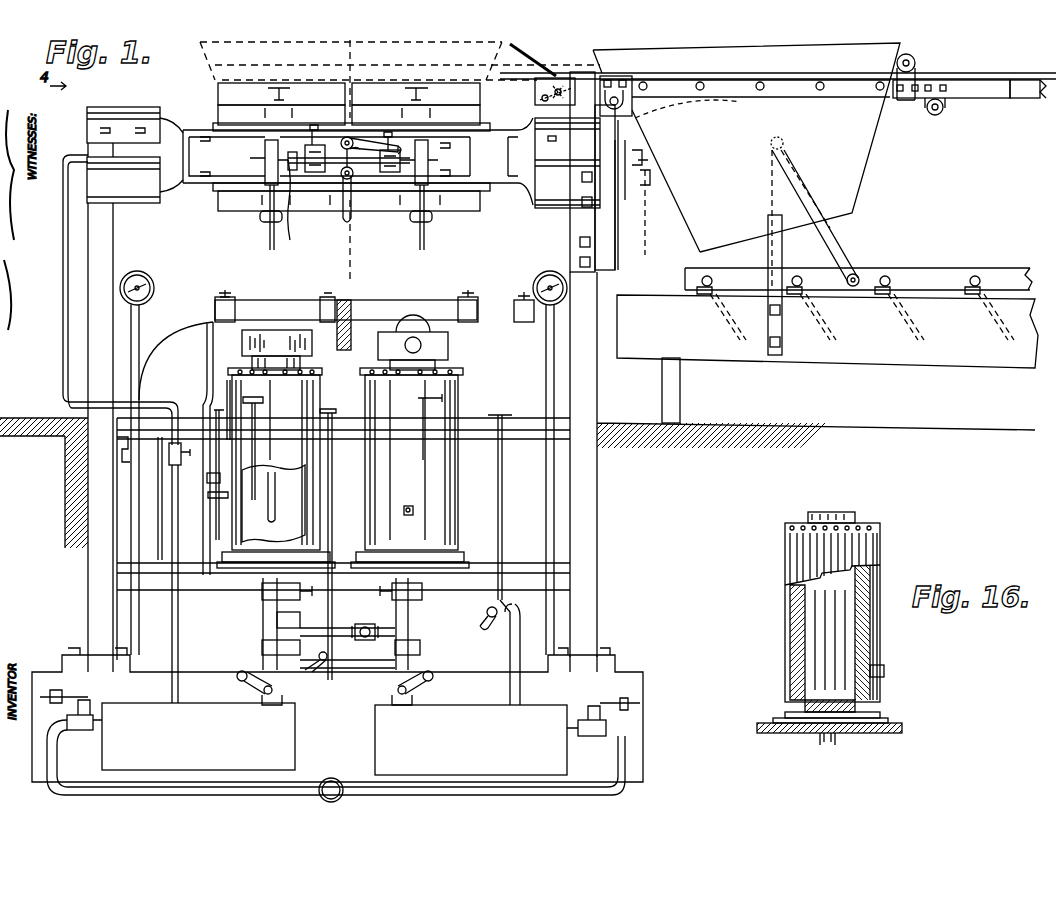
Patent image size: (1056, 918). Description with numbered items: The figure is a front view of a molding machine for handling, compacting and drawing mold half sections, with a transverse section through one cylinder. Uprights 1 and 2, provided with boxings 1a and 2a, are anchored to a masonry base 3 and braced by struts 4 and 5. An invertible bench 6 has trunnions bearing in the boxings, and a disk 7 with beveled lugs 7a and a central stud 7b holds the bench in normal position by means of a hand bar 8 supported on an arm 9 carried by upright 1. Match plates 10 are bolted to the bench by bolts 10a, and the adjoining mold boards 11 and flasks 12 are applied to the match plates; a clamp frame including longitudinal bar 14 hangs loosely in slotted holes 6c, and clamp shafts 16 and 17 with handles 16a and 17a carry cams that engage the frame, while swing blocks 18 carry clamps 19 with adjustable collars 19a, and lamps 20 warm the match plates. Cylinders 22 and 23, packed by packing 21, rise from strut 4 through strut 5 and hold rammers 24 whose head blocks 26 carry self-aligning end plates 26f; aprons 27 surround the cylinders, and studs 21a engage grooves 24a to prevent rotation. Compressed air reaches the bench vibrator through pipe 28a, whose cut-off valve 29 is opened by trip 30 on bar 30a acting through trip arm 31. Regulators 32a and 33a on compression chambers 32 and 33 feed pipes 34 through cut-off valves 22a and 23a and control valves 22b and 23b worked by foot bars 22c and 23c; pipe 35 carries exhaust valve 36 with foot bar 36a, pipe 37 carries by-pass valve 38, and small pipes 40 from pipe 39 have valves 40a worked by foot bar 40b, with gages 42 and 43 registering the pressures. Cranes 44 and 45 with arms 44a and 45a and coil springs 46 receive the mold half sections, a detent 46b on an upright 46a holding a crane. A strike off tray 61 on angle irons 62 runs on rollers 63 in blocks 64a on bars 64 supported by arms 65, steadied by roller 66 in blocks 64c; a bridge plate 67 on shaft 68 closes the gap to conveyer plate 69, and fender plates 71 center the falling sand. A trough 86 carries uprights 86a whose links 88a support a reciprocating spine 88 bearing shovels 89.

In FIG. 1, the upright 1 is at (594, 574).
In FIG. 1, the boxing 1a is at (567, 163).
In FIG. 1, the upright 2 is at (90, 575).
In FIG. 1, the boxing 2a is at (123, 155).
In FIG. 1, the base 3 is at (643, 760).
In FIG. 1, the strut 4 is at (514, 570).
In FIG. 16, the strut 4 is at (904, 724).
In FIG. 1, the strut 5 is at (307, 35).
In FIG. 1, the invertible bench 6 is at (505, 190).
In FIG. 1, the slotted hole 6c is at (291, 210).
In FIG. 1, the disk 7 is at (87, 138).
In FIG. 1, the beveled lugs 7a is at (655, 138).
In FIG. 1, the stud 7b is at (650, 178).
In FIG. 1, the hand bar 8 is at (190, 268).
In FIG. 1, the arm 9 is at (620, 237).
In FIG. 1, the match plate 10 is at (472, 132).
In FIG. 1, the bolts 10a is at (470, 147).
In FIG. 1, the block 11 is at (218, 116).
In FIG. 1, the flask 12 is at (349, 94).
In FIG. 1, the longitudinal bar 14 is at (430, 160).
In FIG. 1, the clamp shaft 16 is at (352, 139).
In FIG. 1, the handle 16a is at (400, 148).
In FIG. 1, the clamp shaft 17 is at (342, 180).
In FIG. 1, the handle 17a is at (352, 216).
In FIG. 1, the swing block 18 is at (264, 166).
In FIG. 1, the clamp 19 is at (426, 232).
In FIG. 1, the collar 19a is at (262, 218).
In FIG. 1, the lamp 20 is at (390, 172).
In FIG. 1, the packing 21 is at (462, 566).
In FIG. 16, the packing 21 is at (776, 718).
In FIG. 1, the stud 21a is at (405, 516).
In FIG. 16, the stud 21a is at (886, 670).
In FIG. 1, the cylinder 22 is at (450, 554).
In FIG. 16, the cylinder 22 is at (872, 712).
In FIG. 1, the cut off valve 22a is at (420, 597).
In FIG. 1, the control valve 22b is at (432, 696).
In FIG. 1, the foot bar 22c is at (440, 398).
In FIG. 1, the cylinder 23 is at (230, 550).
In FIG. 1, the cut off valve 23a is at (262, 597).
In FIG. 1, the control valve 23b is at (262, 696).
In FIG. 1, the foot bar 23c is at (245, 388).
In FIG. 1, the rammer 24 is at (268, 497).
In FIG. 16, the rammer 24 is at (800, 614).
In FIG. 16, the groove 24a is at (870, 632).
In FIG. 1, the head block 26 is at (460, 355).
In FIG. 1, the end plate 26f is at (442, 336).
In FIG. 1, the apron 27 is at (345, 459).
In FIG. 16, the apron 27 is at (878, 552).
In FIG. 1, the air pipe 28a is at (63, 352).
In FIG. 1, the cut-off valve 29 is at (170, 456).
In FIG. 1, the trip 30 is at (208, 494).
In FIG. 1, the bar 30a is at (212, 476).
In FIG. 1, the trip arm 31 is at (200, 400).
In FIG. 1, the compression chamber 32 is at (471, 740).
In FIG. 1, the regulator 32a is at (596, 737).
In FIG. 1, the compression chamber 33 is at (198, 736).
In FIG. 1, the regulator 33a is at (80, 730).
In FIG. 1, the pipe 34 is at (262, 648).
In FIG. 1, the pipe 35 is at (370, 670).
In FIG. 1, the exhaust valve 36 is at (312, 674).
In FIG. 1, the foot bar 36a is at (340, 544).
In FIG. 1, the pipe 37 is at (292, 630).
In FIG. 1, the by-pass valve 38 is at (365, 622).
In FIG. 1, the pipe 39 is at (130, 790).
In FIG. 1, the small pipe 40 is at (507, 667).
In FIG. 1, the valve 40a is at (478, 614).
In FIG. 1, the foot bar 40b is at (500, 492).
In FIG. 1, the gage 42 is at (530, 276).
In FIG. 1, the gage 43 is at (128, 276).
In FIG. 1, the crane 44 is at (597, 335).
In FIG. 1, the crane arm 44a is at (540, 306).
In FIG. 1, the crane 45 is at (388, 304).
In FIG. 1, the crane arm 45a is at (214, 306).
In FIG. 1, the coil spring 46 is at (224, 298).
In FIG. 1, the upright 46a is at (352, 360).
In FIG. 1, the detent 46b is at (362, 339).
In FIG. 1, the strike off tray 61 is at (790, 58).
In FIG. 1, the angle iron 62 is at (790, 74).
In FIG. 1, the roller 63 is at (946, 107).
In FIG. 1, the bar 64 is at (951, 89).
In FIG. 1, the block 64a is at (940, 115).
In FIG. 1, the block 64c is at (908, 100).
In FIG. 1, the arm 65 is at (578, 157).
In FIG. 1, the roller 66 is at (912, 60).
In FIG. 1, the bridge plate 67 is at (560, 76).
In FIG. 1, the transverse shaft 68 is at (560, 91).
In FIG. 1, the conveyer plate 69 is at (696, 107).
In FIG. 1, the fender plate 71 is at (862, 186).
In FIG. 1, the trough 86 is at (827, 331).
In FIG. 1, the upright 86a is at (778, 255).
In FIG. 1, the spine 88 is at (918, 272).
In FIG. 1, the link 88a is at (846, 250).
In FIG. 1, the shovel 89 is at (995, 284).